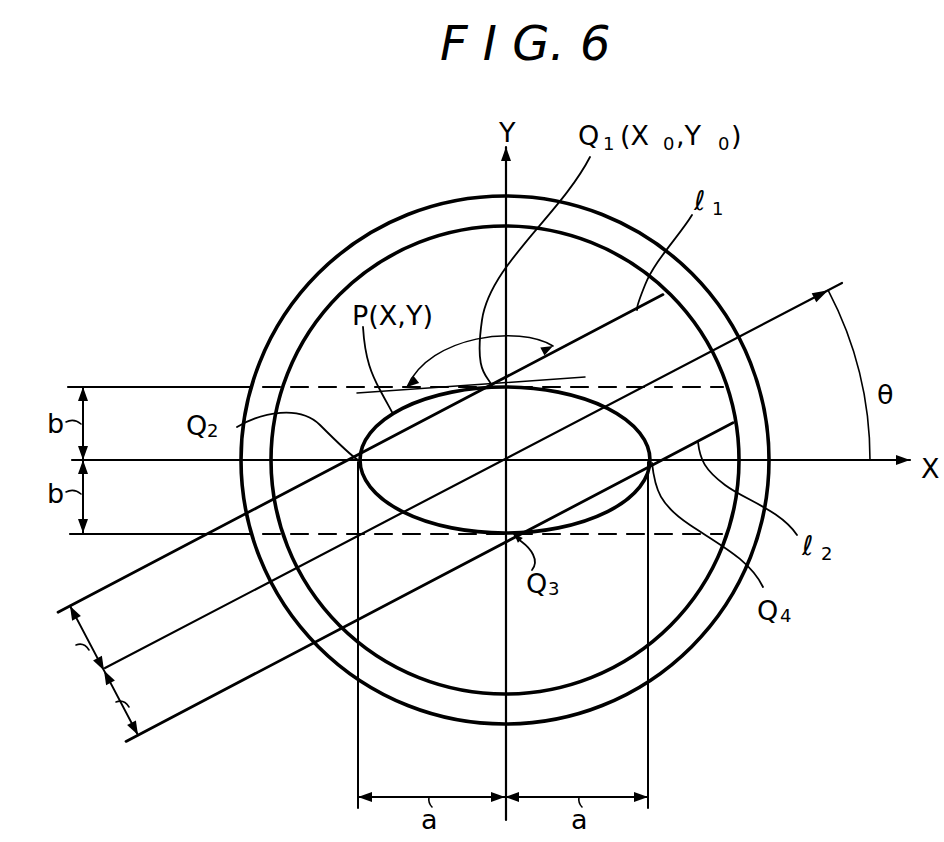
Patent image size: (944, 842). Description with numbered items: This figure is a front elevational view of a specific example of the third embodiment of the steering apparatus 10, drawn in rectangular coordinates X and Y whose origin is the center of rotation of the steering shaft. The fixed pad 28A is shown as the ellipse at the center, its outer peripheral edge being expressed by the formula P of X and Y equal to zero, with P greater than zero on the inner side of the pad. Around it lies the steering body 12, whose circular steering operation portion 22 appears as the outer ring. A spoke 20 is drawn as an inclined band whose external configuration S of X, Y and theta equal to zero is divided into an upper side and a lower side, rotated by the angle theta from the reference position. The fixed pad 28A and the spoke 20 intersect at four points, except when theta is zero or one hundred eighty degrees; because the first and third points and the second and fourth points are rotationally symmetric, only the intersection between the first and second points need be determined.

The steering apparatus 10 is at (489, 453).
The steering body 12 is at (350, 243).
The spoke 20 is at (392, 585).
The steering operation portion 22 is at (693, 298).
The fixed pad 28A is at (427, 523).